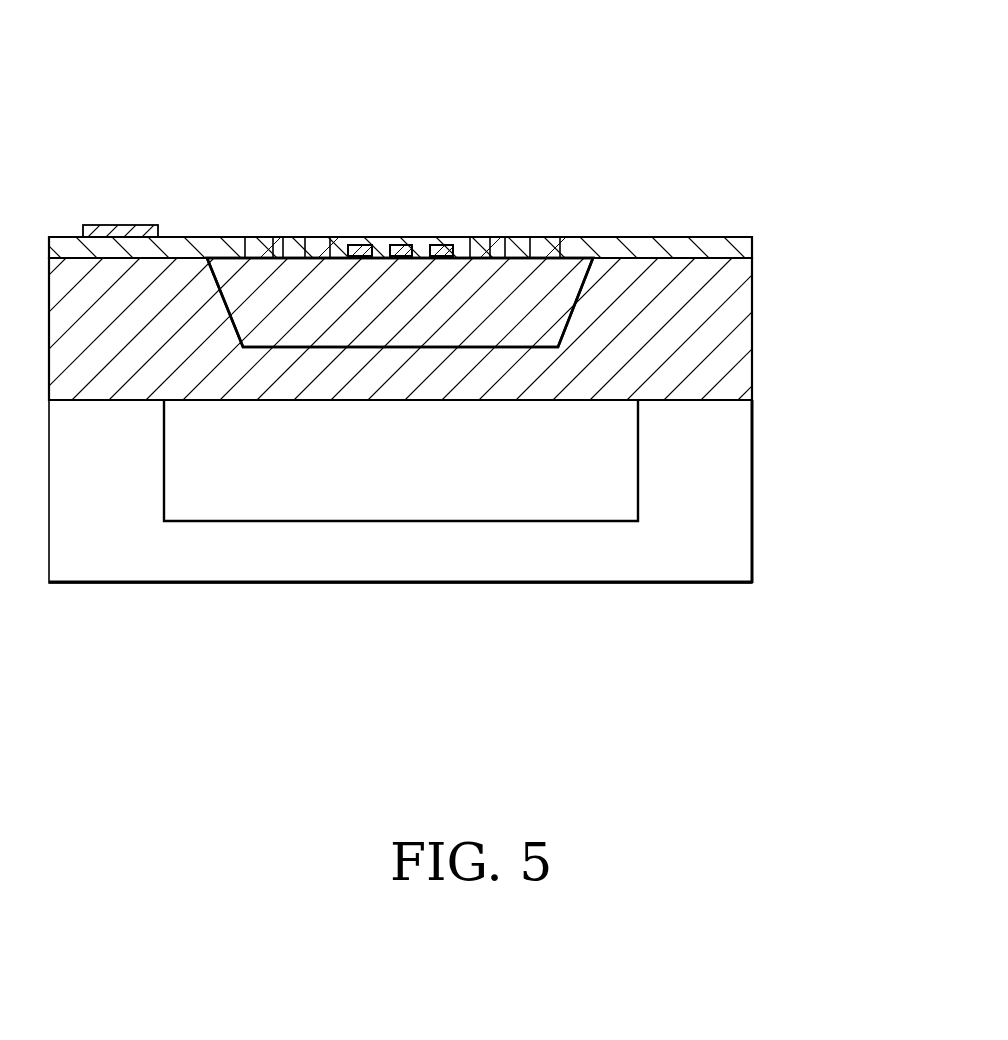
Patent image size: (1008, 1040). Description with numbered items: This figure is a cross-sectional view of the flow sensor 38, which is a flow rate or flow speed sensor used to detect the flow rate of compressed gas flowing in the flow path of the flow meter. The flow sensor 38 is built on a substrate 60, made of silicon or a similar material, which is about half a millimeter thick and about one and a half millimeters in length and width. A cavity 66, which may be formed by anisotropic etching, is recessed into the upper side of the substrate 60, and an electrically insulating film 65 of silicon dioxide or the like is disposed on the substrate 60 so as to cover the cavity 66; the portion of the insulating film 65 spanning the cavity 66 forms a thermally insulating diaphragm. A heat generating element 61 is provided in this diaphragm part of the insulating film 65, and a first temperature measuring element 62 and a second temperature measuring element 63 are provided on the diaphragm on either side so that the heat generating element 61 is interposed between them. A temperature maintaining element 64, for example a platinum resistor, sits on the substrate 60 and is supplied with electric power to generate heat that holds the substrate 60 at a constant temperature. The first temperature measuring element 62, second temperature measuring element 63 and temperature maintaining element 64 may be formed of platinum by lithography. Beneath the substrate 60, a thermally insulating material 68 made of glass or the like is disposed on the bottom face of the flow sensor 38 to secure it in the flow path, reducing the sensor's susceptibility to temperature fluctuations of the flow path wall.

The flow sensor 38 is at (203, 166).
The substrate 60 is at (756, 327).
The heat generating element 61 is at (394, 247).
The first temperature measuring element 62 is at (352, 247).
The second temperature measuring element 63 is at (441, 247).
The temperature maintaining element 64 is at (120, 225).
The insulating film 65 is at (656, 237).
The cavity 66 is at (341, 325).
The thermally insulating material 68 is at (755, 490).